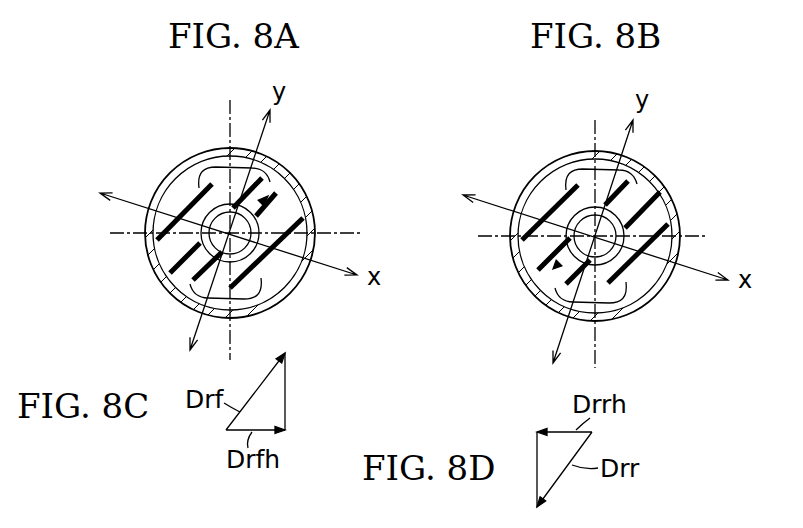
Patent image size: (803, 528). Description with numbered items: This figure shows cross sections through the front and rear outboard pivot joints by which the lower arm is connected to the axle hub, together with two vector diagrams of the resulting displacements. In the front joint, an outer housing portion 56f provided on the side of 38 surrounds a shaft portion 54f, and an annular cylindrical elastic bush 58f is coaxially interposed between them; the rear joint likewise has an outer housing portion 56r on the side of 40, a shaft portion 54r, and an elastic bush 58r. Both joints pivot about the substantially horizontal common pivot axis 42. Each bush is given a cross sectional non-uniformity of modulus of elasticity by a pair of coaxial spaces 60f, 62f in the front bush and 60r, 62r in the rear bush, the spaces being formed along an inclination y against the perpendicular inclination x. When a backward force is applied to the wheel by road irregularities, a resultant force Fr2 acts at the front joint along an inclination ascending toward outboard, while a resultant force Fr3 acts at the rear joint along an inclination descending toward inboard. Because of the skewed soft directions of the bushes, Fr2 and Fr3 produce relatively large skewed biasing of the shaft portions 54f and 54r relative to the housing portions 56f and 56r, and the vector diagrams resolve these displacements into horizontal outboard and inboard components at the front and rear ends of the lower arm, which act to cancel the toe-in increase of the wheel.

In FIG. 8A, the front outboard pivot joint housing side 38 is at (162, 178).
In FIG. 8B, the rear outboard pivot joint housing side 40 is at (520, 182).
In FIG. 8A, the common pivot axis 42 is at (280, 280).
In FIG. 8B, the common pivot axis 42 is at (657, 283).
In FIG. 8A, the front shaft portion 54f is at (195, 173).
In FIG. 8B, the rear shaft portion 54r is at (550, 180).
In FIG. 8A, the front outer housing portion 56f is at (152, 193).
In FIG. 8B, the rear outer housing portion 56r is at (670, 217).
In FIG. 8A, the front elastic bush 58f is at (168, 258).
In FIG. 8B, the rear elastic bush 58r is at (533, 252).
In FIG. 8A, the front coaxial space 60f is at (212, 160).
In FIG. 8B, the rear coaxial space 60r is at (640, 197).
In FIG. 8A, the front coaxial space 62f is at (168, 280).
In FIG. 8B, the rear coaxial space 62r is at (615, 307).
In FIG. 8A, the resultant force at front outboard pivot joint Fr2 is at (270, 178).
In FIG. 8B, the resultant force at rear outboard pivot joint Fr3 is at (556, 264).